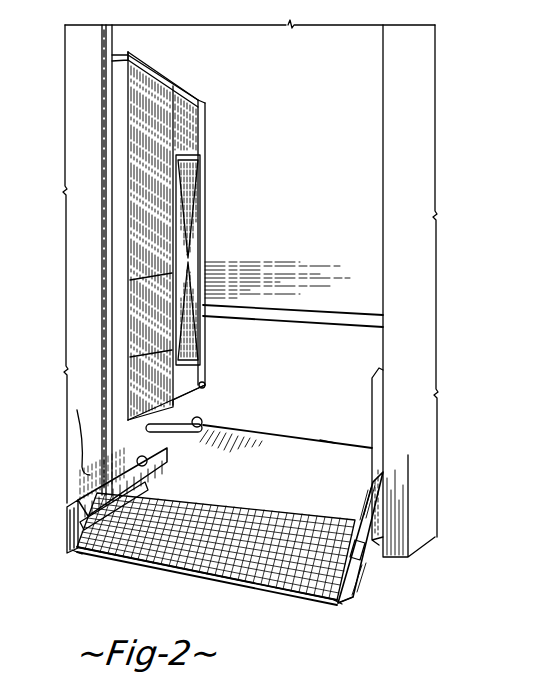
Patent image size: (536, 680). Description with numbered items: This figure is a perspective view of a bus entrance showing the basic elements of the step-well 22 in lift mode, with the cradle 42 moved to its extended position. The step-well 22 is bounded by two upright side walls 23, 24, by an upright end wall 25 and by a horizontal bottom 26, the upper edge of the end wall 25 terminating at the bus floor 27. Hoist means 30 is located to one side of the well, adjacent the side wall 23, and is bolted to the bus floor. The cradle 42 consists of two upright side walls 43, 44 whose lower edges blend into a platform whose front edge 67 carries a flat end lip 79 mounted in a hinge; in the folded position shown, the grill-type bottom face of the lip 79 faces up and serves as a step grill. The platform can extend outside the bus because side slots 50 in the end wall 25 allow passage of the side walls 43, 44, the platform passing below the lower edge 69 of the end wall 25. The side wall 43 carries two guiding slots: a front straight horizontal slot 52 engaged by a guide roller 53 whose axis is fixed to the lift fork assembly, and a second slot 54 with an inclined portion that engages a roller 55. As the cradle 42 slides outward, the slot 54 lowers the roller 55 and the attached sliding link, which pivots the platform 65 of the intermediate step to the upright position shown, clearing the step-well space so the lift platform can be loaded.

The step-well 22 is at (364, 347).
The upright side wall 23 is at (140, 392).
The upright side wall 24 is at (375, 400).
The upright end wall 25 is at (302, 347).
The horizontal bottom 26 is at (275, 480).
The bus floor 27 is at (312, 300).
The hoist means 30 is at (182, 86).
The cradle 42 is at (75, 492).
The upright side wall of cradle 43 is at (155, 451).
The upright side wall of cradle 44 is at (362, 495).
The side slot 50 is at (207, 418).
The horizontal slot 52 is at (150, 474).
The guide roller 53 is at (148, 462).
The second slot 54 is at (205, 388).
The roller 55 is at (229, 434).
The platform of intermediate step 65 is at (205, 226).
The front edge of platform 67 is at (188, 565).
The lower edge of end wall 69 is at (292, 440).
The end lip 79 is at (307, 520).